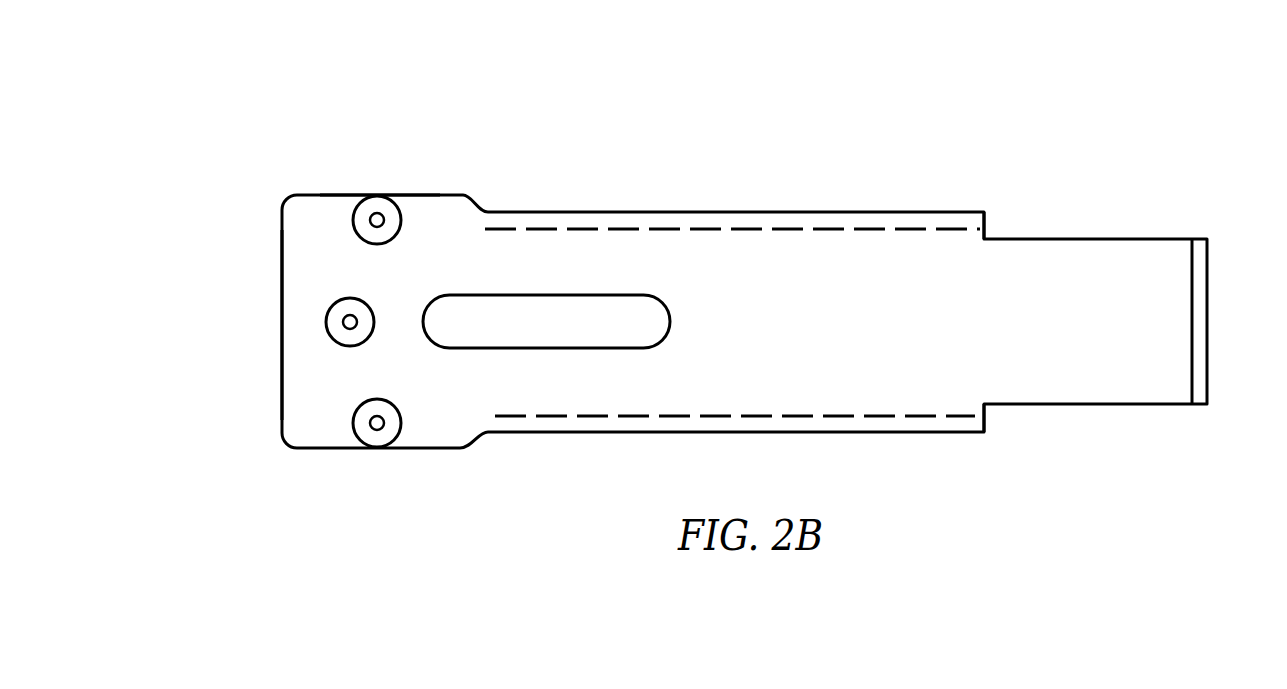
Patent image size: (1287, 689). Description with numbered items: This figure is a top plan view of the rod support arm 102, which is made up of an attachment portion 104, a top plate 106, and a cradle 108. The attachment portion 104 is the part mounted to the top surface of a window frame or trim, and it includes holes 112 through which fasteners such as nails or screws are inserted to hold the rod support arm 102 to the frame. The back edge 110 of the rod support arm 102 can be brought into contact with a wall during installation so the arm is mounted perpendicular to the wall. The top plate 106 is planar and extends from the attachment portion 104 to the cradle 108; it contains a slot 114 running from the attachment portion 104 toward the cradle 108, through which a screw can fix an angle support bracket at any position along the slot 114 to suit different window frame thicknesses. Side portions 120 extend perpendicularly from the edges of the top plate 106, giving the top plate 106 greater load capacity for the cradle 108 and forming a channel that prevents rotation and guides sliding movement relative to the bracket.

The rod support arm 102 is at (1063, 151).
The attachment portion 104 is at (366, 192).
The top plate 106 is at (808, 260).
The cradle 108 is at (1154, 234).
The back edge 110 is at (278, 222).
The holes 112 is at (352, 220).
The slot 114 is at (498, 295).
The side portions 120 is at (985, 225).